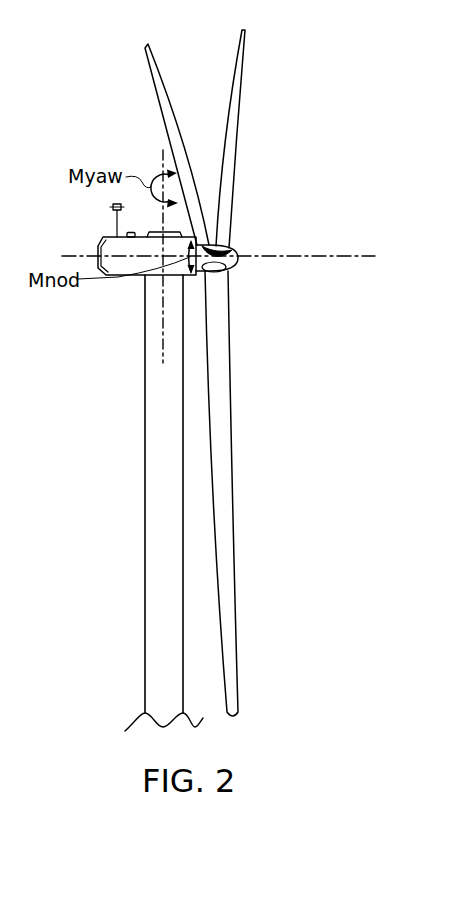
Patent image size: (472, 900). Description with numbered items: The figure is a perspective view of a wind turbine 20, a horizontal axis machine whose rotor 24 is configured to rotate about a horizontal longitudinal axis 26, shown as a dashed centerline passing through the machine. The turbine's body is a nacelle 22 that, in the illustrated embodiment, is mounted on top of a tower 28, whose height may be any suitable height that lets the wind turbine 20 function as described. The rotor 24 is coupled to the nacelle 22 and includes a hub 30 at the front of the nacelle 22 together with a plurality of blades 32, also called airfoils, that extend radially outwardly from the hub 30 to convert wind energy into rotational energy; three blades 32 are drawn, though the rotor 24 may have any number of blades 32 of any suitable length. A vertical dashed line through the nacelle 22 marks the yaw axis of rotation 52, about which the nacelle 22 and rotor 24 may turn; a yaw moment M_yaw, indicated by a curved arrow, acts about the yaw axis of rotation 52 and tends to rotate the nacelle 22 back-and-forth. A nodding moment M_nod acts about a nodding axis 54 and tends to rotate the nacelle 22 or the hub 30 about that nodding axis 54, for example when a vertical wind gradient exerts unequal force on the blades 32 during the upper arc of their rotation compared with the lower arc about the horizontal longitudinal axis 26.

The wind turbine 20 is at (91, 119).
The nacelle 22 is at (128, 278).
The rotor 24 is at (238, 281).
The horizontal longitudinal axis 26 is at (357, 260).
The tower 28 is at (145, 549).
The hub 30 is at (239, 260).
The blades 32 is at (165, 90).
The yaw axis of rotation 52 is at (161, 152).
The nodding axis 54 is at (203, 257).